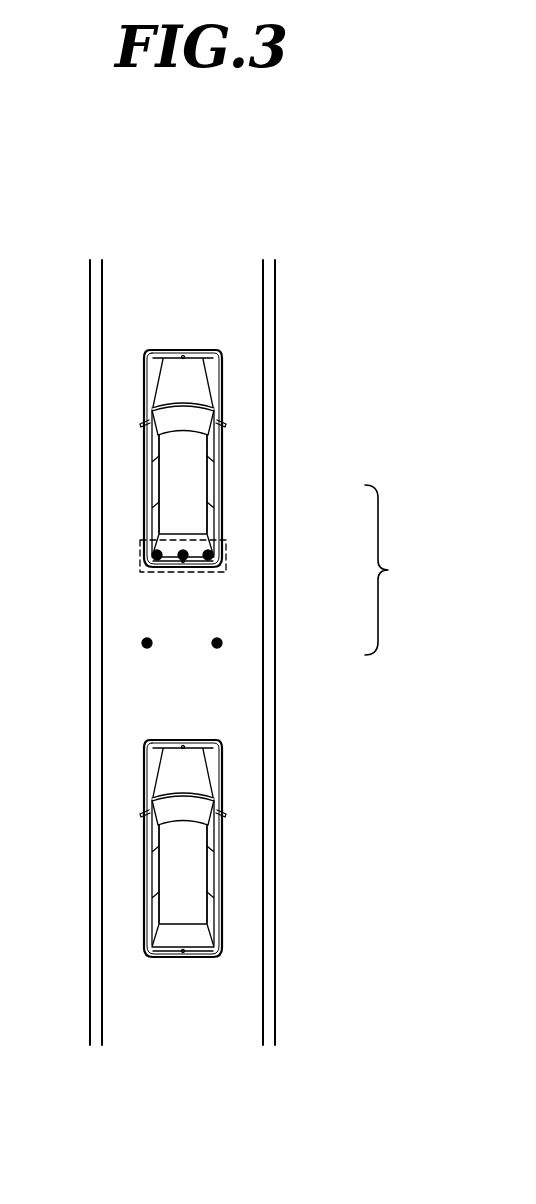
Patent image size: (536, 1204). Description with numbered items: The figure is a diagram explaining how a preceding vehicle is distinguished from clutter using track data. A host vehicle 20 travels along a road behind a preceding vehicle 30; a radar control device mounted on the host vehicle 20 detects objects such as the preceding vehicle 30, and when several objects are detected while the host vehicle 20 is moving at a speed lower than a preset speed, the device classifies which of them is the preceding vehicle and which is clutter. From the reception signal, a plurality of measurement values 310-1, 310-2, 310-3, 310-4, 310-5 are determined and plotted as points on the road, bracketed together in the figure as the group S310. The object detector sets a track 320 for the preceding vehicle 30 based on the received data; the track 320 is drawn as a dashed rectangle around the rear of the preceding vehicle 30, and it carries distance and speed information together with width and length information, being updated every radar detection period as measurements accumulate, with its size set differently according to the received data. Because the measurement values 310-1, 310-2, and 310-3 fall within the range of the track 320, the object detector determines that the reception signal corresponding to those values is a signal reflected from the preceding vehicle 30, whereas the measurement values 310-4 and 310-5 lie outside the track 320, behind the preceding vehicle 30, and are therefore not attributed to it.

The preceding vehicle 30 is at (183, 349).
The host vehicle 20 is at (183, 739).
The track 320 is at (140, 555).
The measurement value 310-1 is at (157, 555).
The measurement value 310-2 is at (183, 555).
The measurement value 310-3 is at (208, 557).
The measurement value 310-4 is at (150, 640).
The measurement value 310-5 is at (222, 642).
The feature point extraction step S310 is at (405, 570).